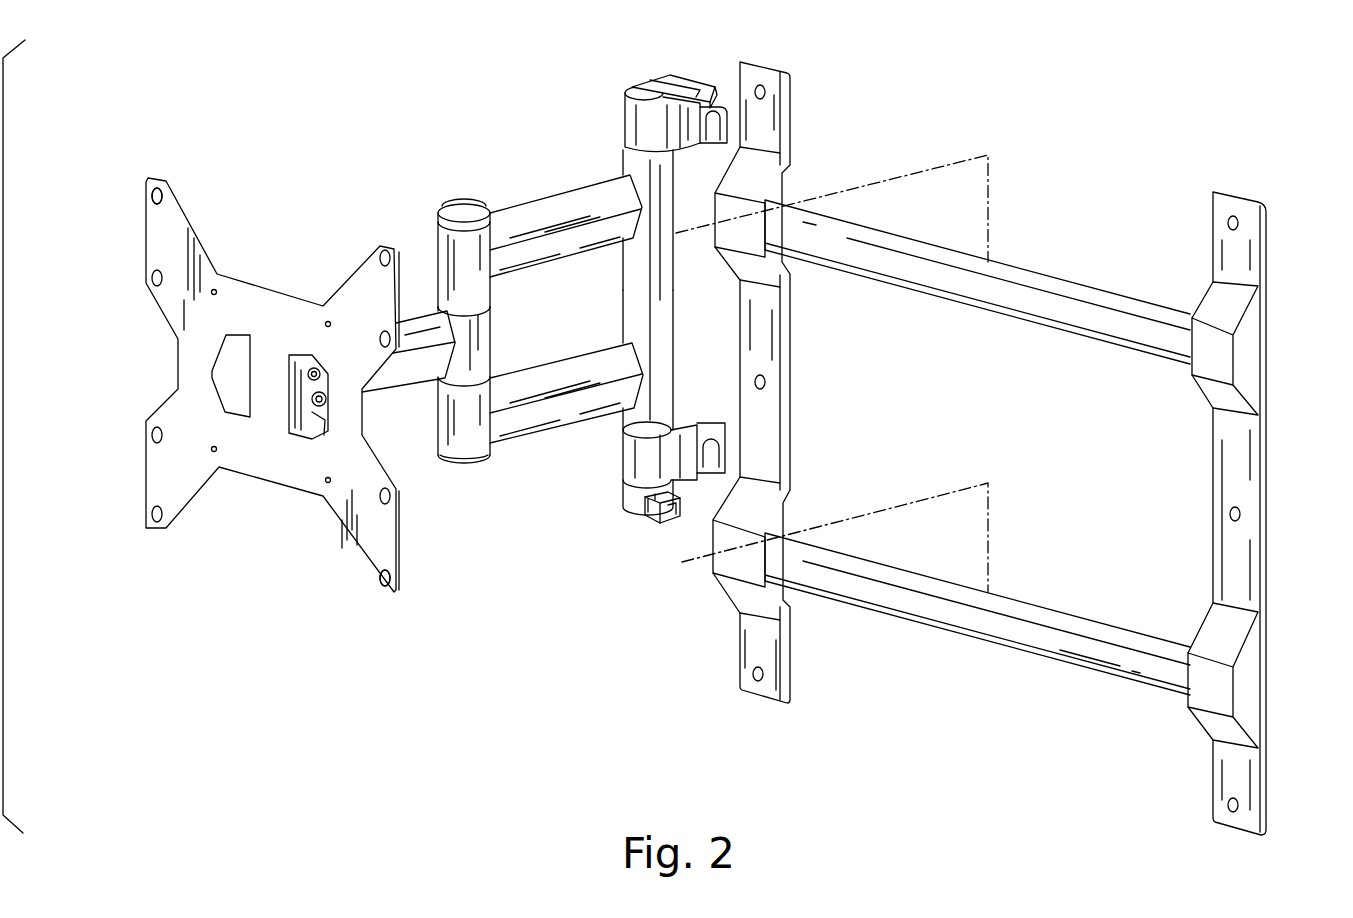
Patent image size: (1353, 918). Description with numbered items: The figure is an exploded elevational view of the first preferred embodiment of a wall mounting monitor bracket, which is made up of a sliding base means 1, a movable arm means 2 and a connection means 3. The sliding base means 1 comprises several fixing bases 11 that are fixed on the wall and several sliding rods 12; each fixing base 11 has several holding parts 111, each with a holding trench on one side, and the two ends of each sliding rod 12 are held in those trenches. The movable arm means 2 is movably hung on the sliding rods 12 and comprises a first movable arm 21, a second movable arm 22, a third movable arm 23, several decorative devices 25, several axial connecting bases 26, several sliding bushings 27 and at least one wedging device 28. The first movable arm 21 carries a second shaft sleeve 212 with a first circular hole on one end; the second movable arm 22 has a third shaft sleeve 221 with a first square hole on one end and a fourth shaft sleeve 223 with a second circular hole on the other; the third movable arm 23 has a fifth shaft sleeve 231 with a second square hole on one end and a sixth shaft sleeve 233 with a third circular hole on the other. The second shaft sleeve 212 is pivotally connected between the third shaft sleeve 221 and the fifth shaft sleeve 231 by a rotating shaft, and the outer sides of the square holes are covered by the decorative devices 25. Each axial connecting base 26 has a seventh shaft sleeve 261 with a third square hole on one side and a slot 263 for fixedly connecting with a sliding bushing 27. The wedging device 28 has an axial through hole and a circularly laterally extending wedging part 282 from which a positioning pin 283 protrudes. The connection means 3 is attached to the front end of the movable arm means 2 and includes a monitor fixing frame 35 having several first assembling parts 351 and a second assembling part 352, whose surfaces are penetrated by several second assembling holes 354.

The sliding base means 1 is at (1103, 291).
The fixing base 11 is at (795, 90).
The holding part 111 is at (730, 213).
The sliding rod 12 is at (1008, 300).
The movable arm means 2 is at (620, 168).
The first movable arm 21 is at (422, 384).
The second shaft sleeve 212 is at (477, 327).
The second movable arm 22 is at (548, 190).
The third shaft sleeve 221 is at (440, 225).
The fourth shaft sleeve 223 is at (660, 252).
The third movable arm 23 is at (588, 356).
The fifth shaft sleeve 231 is at (463, 432).
The sixth shaft sleeve 233 is at (665, 418).
The decorative device 25 is at (467, 208).
The axial connecting base 26 is at (655, 70).
The seventh shaft sleeve 261 is at (628, 122).
The slot 263 is at (725, 95).
The sliding bushing 27 is at (713, 122).
The wedging device 28 is at (645, 508).
The wedging part 282 is at (670, 517).
The positioning pin 283 is at (636, 519).
The connection means 3 is at (259, 281).
The monitor fixing frame 35 is at (174, 416).
The first assembling part 351 is at (310, 410).
The second assembling part 352 is at (350, 521).
The second assembling hole 354 is at (150, 188).